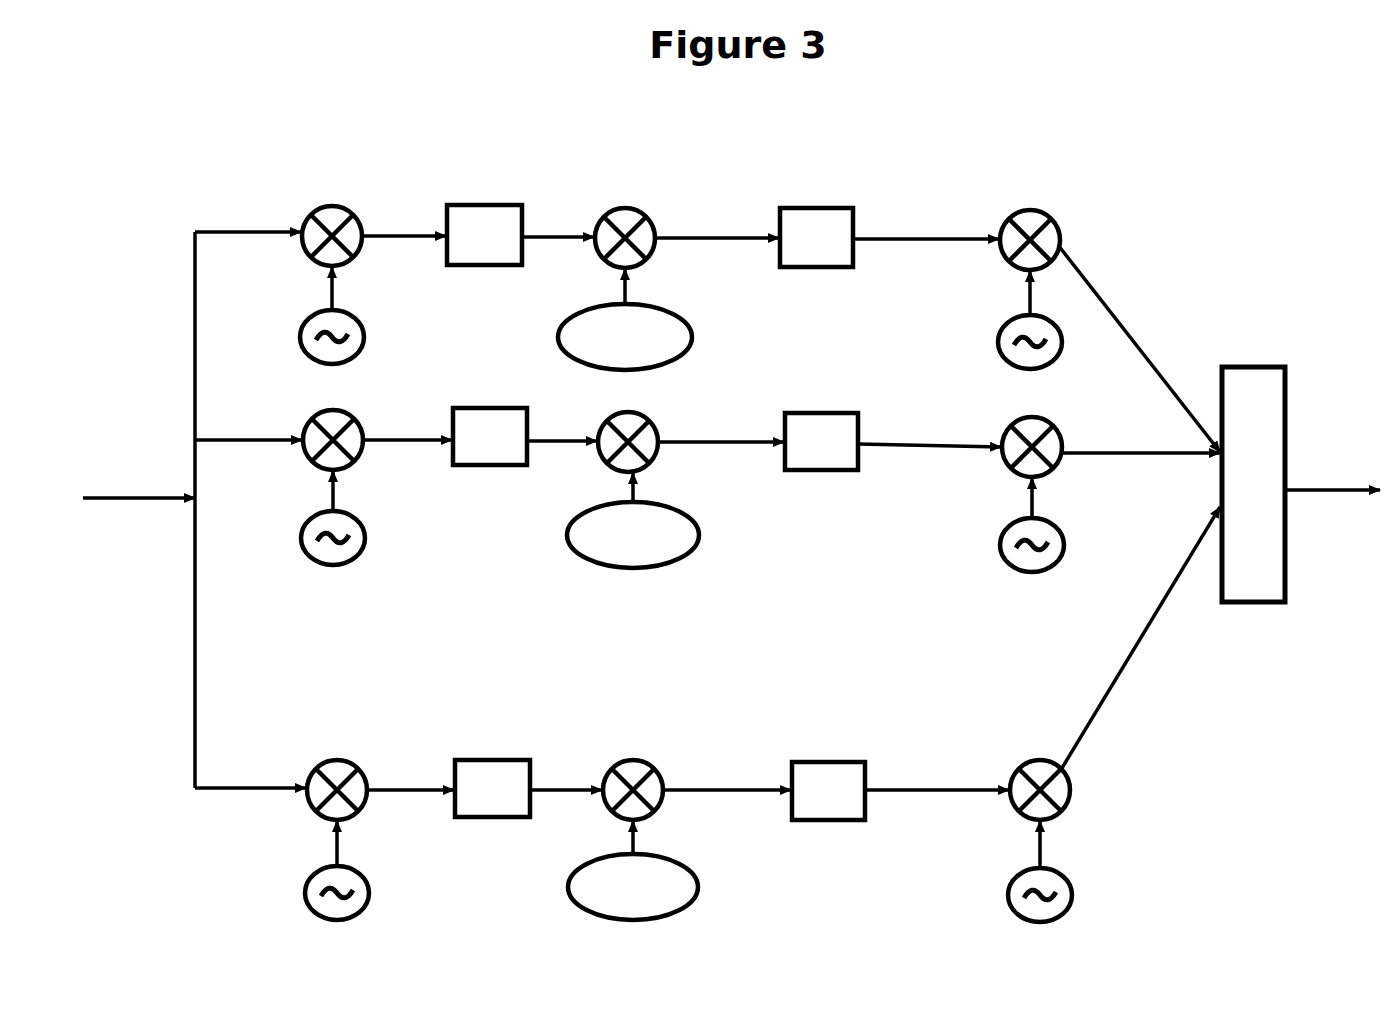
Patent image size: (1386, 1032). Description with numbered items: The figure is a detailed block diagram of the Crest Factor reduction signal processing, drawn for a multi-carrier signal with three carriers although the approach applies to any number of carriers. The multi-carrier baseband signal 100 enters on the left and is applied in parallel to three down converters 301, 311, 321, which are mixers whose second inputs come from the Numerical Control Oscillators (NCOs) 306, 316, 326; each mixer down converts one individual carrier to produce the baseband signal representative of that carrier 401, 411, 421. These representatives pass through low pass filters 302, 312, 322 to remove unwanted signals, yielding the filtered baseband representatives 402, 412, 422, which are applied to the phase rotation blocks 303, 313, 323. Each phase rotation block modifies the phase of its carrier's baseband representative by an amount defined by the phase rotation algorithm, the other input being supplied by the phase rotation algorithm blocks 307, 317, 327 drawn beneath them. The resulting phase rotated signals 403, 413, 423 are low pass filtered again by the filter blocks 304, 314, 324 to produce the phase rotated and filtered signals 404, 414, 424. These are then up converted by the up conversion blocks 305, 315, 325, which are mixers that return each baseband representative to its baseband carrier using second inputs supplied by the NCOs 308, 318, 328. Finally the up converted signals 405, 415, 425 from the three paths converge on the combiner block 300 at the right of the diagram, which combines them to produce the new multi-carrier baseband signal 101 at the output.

The multi-carrier baseband signal 100 is at (139, 476).
The new multi-carrier baseband signal 101 is at (1332, 467).
The combiner block 300 is at (1253, 466).
The down converter 301 is at (332, 228).
The low pass filter 302 is at (484, 224).
The phase rotation block 303 is at (625, 229).
The filter block 304 is at (816, 227).
The up conversion block 305 is at (1030, 231).
The NCO 306 is at (334, 315).
The phase rotation algorithm block 307 is at (649, 319).
The NCO 308 is at (1007, 320).
The down converter 311 is at (333, 430).
The low pass filter 312 is at (490, 424).
The phase rotation block 313 is at (628, 431).
The filter block 314 is at (821, 430).
The up conversion block 315 is at (1032, 436).
The NCO 316 is at (335, 518).
The phase rotation algorithm block 317 is at (652, 520).
The NCO 318 is at (1007, 525).
The down converter 321 is at (337, 779).
The low pass filter 322 is at (492, 777).
The phase rotation block 323 is at (633, 779).
The filter block 324 is at (828, 779).
The up conversion block 325 is at (1040, 780).
The NCO 326 is at (344, 870).
The phase rotation algorithm block 327 is at (654, 870).
The NCO 328 is at (1013, 871).
The baseband signal representative of carrier 401 is at (403, 257).
The filtered baseband representative of carrier 402 is at (558, 257).
The phase rotated signal 403 is at (717, 255).
The phase rotated and filtered signal 404 is at (926, 257).
The up converted signal 405 is at (1139, 348).
The baseband signal representative of carrier 411 is at (407, 458).
The filtered baseband representative of carrier 412 is at (562, 458).
The phase rotated signal 413 is at (721, 457).
The phase rotated and filtered signal 414 is at (929, 461).
The up converted signal 415 is at (1141, 470).
The baseband signal representative of carrier 421 is at (410, 809).
The filtered baseband representative of carrier 422 is at (566, 813).
The phase rotated signal 423 is at (727, 811).
The phase rotated and filtered signal 424 is at (937, 806).
The up converted signal 425 is at (1141, 637).